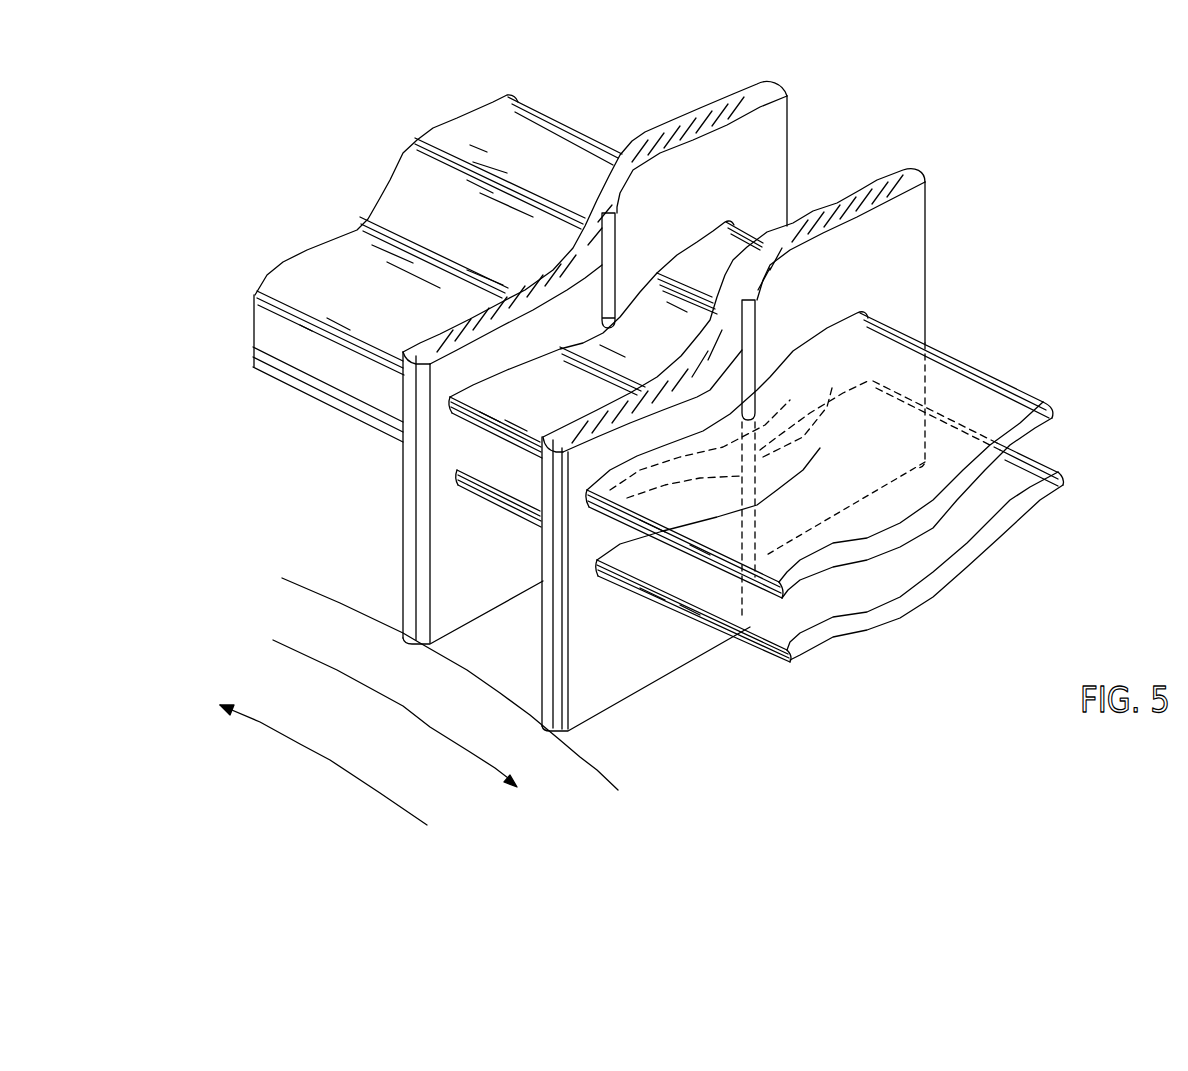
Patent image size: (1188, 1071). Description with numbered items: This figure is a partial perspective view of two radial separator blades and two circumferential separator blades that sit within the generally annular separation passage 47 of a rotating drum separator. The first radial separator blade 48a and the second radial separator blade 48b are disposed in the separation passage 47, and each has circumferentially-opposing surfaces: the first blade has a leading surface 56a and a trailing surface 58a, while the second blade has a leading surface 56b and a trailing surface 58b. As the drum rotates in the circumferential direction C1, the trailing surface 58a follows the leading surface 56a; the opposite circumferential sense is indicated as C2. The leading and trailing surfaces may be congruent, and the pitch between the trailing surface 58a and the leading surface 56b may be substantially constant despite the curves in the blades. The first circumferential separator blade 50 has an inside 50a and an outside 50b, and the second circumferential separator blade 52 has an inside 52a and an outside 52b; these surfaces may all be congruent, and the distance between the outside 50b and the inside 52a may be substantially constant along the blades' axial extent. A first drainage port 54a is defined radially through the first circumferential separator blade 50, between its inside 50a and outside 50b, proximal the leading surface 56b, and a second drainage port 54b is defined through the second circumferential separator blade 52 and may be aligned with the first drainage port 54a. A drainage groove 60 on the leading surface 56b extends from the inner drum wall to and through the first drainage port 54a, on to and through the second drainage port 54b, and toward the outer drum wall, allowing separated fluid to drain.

The separation passage 47 is at (285, 612).
The first radial separator blade 48a is at (629, 331).
The second radial separator blade 48b is at (766, 418).
The first circumferential separator blade 50 is at (870, 521).
The inside of the first circumferential separator blade 50a is at (1047, 497).
The outside of the first circumferential separator blade 50b is at (1045, 467).
The second circumferential separator blade 52 is at (867, 454).
The inside of the second circumferential separator blade 52a is at (1052, 414).
The outside of the second circumferential separator blade 52b is at (1027, 405).
The first drainage port 54a is at (738, 478).
The second drainage port 54b is at (750, 396).
The leading surface of the first radial separator blade 56a is at (767, 138).
The leading surface of the second radial separator blade 56b is at (903, 227).
The trailing surface of the first radial separator blade 58a is at (723, 97).
The trailing surface of the second radial separator blade 58b is at (862, 185).
The drainage groove 60 is at (607, 293).
The circumferential direction C1 is at (352, 675).
The second circumferential direction C2 is at (288, 730).